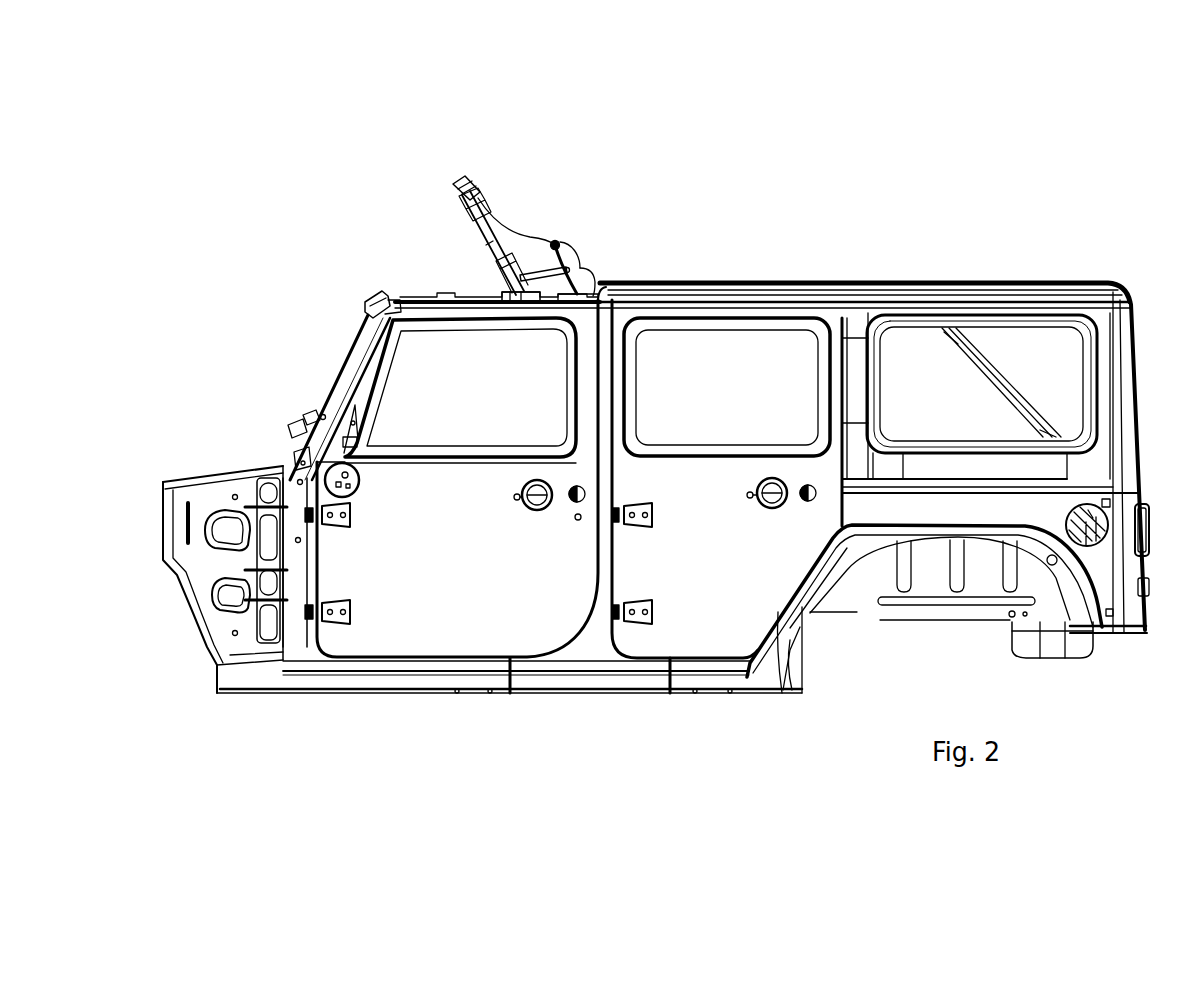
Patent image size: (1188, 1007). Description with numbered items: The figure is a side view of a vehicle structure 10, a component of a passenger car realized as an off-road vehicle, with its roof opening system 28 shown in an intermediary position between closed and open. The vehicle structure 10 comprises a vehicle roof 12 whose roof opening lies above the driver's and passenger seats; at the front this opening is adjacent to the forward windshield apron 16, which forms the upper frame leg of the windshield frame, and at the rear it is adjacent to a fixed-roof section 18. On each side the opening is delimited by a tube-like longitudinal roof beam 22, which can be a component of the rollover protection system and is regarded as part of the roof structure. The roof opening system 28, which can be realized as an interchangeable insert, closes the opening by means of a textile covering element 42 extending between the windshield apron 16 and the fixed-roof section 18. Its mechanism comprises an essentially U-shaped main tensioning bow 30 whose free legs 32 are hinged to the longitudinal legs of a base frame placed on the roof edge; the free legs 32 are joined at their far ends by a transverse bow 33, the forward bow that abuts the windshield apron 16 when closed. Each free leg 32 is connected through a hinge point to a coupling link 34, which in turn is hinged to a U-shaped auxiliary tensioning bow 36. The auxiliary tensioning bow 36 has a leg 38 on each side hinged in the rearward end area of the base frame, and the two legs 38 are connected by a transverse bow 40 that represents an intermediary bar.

The vehicle structure 10 is at (889, 137).
The vehicle roof 12 is at (776, 272).
The forward windshield apron 16 is at (367, 300).
The fixed-roof section 18 is at (913, 280).
The longitudinal roof beam 22 is at (992, 360).
The roof opening system 28 is at (521, 226).
The main tensioning bow 30 is at (510, 240).
The free legs 32 is at (510, 266).
The transverse bow 33 is at (455, 185).
The coupling link 34 is at (541, 270).
The auxiliary tensioning bow 36 is at (568, 248).
The leg 38 is at (567, 268).
The transverse bow 40 is at (558, 242).
The textile covering element 42 is at (590, 262).